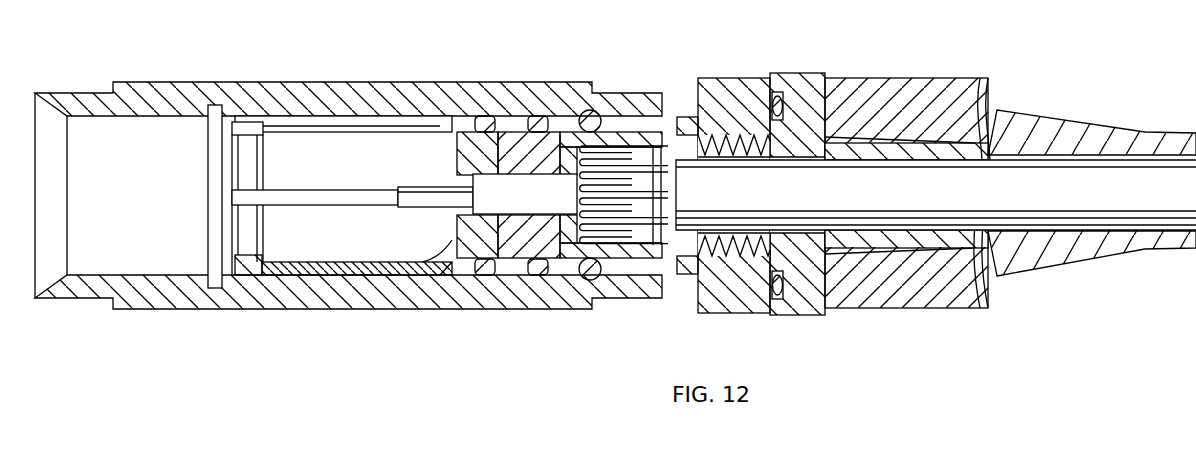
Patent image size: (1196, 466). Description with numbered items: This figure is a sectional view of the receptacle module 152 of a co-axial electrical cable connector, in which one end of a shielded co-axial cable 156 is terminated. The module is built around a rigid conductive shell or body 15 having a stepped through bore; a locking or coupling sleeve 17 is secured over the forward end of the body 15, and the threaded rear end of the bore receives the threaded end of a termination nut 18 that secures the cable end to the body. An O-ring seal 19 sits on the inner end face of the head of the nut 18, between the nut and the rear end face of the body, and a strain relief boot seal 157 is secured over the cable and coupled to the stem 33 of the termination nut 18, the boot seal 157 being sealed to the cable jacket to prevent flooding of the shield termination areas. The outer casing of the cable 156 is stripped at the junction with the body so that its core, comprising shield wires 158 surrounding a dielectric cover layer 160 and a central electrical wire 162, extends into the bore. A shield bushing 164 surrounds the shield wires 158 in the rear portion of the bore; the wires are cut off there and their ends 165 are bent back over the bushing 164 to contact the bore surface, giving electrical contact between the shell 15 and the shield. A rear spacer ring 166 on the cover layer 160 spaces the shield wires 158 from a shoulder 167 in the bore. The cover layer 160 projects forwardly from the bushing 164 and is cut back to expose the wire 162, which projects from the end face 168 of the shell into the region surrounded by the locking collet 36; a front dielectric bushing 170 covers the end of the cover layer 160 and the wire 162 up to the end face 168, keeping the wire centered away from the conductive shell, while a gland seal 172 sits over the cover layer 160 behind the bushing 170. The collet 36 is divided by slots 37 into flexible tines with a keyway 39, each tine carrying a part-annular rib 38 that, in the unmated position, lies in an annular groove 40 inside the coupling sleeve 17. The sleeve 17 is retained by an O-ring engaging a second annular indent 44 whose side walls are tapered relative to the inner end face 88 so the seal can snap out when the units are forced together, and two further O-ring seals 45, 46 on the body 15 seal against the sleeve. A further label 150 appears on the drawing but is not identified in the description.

The coupling sleeve 17 is at (325, 82).
The keyway 39 is at (362, 116).
The receptacle module 152 is at (425, 72).
The O-ring seal 46 is at (486, 116).
The O-ring seal 45 is at (537, 116).
The rear spacer ring 166 is at (563, 116).
The second annular indent 44 is at (590, 110).
The inner end face 88 is at (604, 117).
The shell or body 15 is at (682, 110).
The termination nut 18 is at (798, 80).
The shielded co-axial cable 156 is at (897, 175).
The stem 33 is at (844, 174).
The strain relief boot seal 157 is at (1040, 128).
The annular indent or groove 40 is at (220, 103).
The slots 37 is at (293, 203).
The dielectric cover layer 160 is at (493, 188).
The central electrical wire 162 is at (408, 192).
The shield wires 158 is at (678, 198).
The part-annular rib 38 is at (243, 268).
The locking collet 36 is at (313, 274).
The end face 168 is at (448, 250).
The dielectric bushing 170 is at (473, 236).
The gland seal 172 is at (512, 236).
The shoulder 167 is at (556, 240).
The ends of the wires 165 is at (613, 242).
The shield bushing 164 is at (637, 237).
The O-ring seal 19 is at (798, 300).
The connector assembly 150 is at (947, 312).